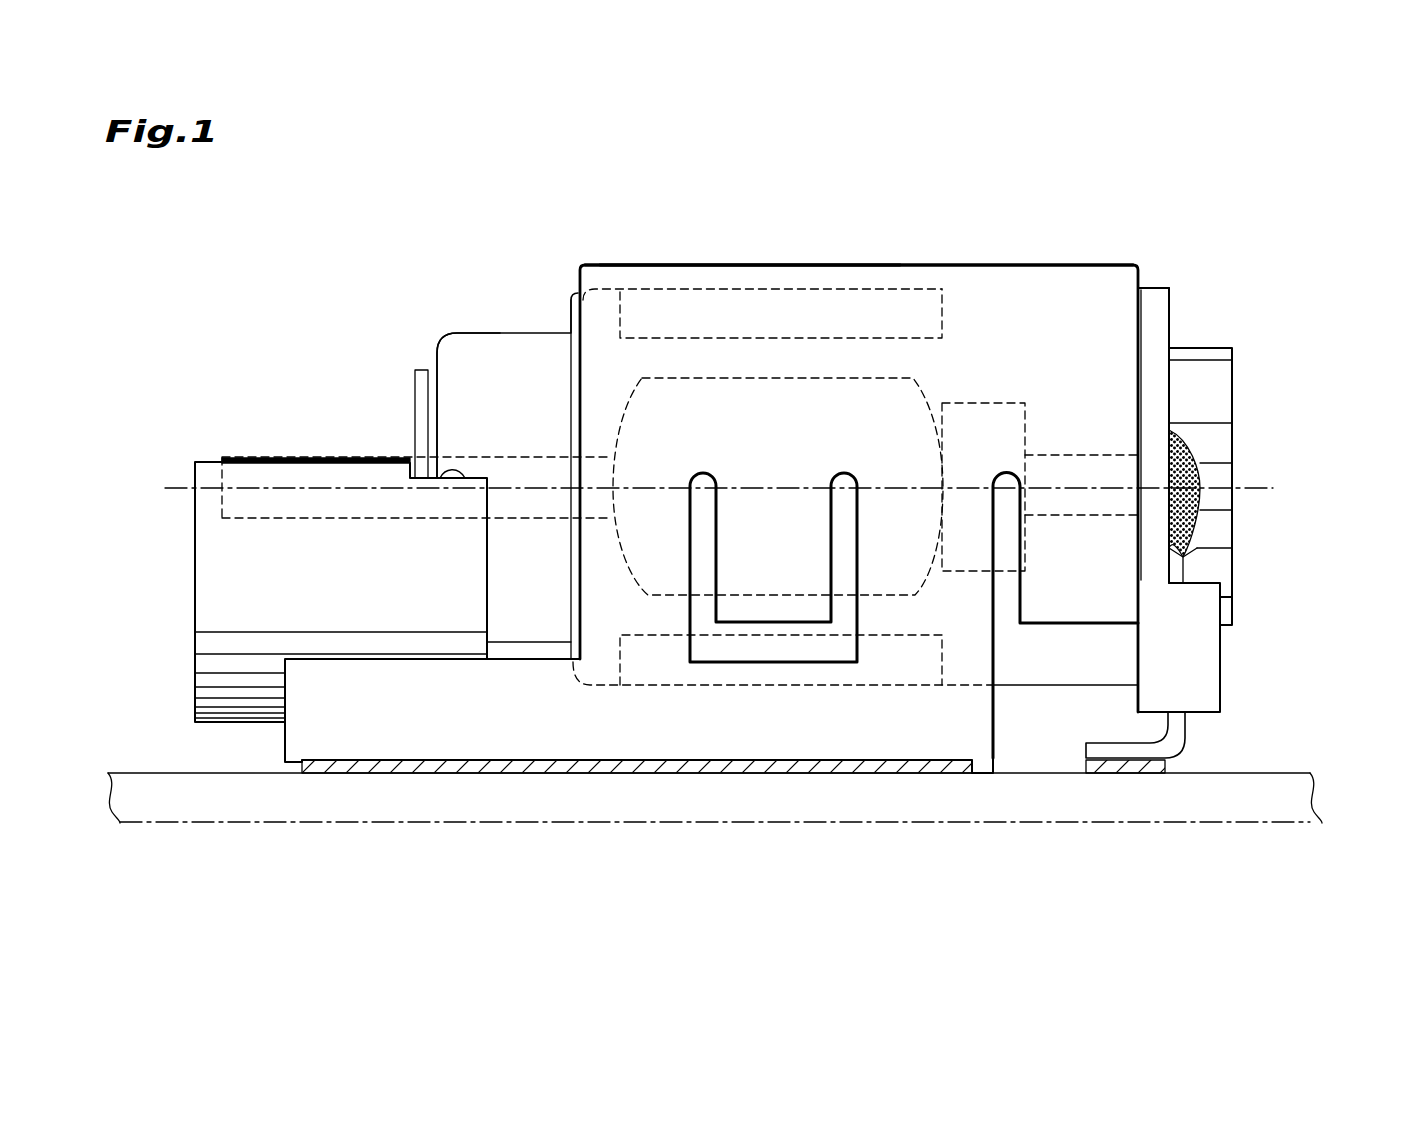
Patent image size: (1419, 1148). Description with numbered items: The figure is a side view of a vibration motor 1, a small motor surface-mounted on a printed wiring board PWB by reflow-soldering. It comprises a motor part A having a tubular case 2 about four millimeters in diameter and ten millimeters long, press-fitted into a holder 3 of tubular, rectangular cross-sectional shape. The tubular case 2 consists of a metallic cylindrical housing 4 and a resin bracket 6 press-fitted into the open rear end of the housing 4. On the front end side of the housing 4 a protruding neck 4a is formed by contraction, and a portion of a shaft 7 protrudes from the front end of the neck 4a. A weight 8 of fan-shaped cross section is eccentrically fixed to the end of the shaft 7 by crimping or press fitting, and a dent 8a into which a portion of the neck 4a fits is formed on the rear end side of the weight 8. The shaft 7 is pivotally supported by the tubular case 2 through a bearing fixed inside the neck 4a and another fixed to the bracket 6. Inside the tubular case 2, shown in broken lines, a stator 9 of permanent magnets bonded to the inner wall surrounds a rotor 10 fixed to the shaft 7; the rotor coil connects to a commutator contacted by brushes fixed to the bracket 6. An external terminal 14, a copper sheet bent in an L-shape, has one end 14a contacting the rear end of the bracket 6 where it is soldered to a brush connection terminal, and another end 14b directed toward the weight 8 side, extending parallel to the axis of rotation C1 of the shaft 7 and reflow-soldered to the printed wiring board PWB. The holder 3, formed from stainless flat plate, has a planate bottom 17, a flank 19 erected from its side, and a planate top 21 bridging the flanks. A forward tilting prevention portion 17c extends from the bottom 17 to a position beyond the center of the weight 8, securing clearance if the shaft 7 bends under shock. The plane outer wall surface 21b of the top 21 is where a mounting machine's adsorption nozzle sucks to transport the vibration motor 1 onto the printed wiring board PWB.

The vibration motor 1 is at (1092, 208).
The tubular case 2 is at (573, 290).
The holder 3 is at (1125, 263).
The housing 4 is at (571, 322).
The neck 4a is at (457, 335).
The bracket 6 is at (1170, 313).
The shaft 7 is at (335, 455).
The weight 8 is at (220, 578).
The dent 8a is at (440, 478).
The stator 9 is at (942, 312).
The rotor 10 is at (622, 397).
The external terminal 14 is at (1188, 733).
The end of external terminal 14a is at (1185, 572).
The end of external terminal 14b is at (1143, 773).
The bottom 17 is at (1000, 752).
The forward tilting prevention portion 17c is at (402, 773).
The flank 19 is at (1142, 373).
The top 21 is at (885, 262).
The outer wall surface 21b is at (717, 264).
The motor part A is at (370, 308).
The axis of rotation C1 is at (1252, 488).
The printed wiring board PWB is at (1253, 790).